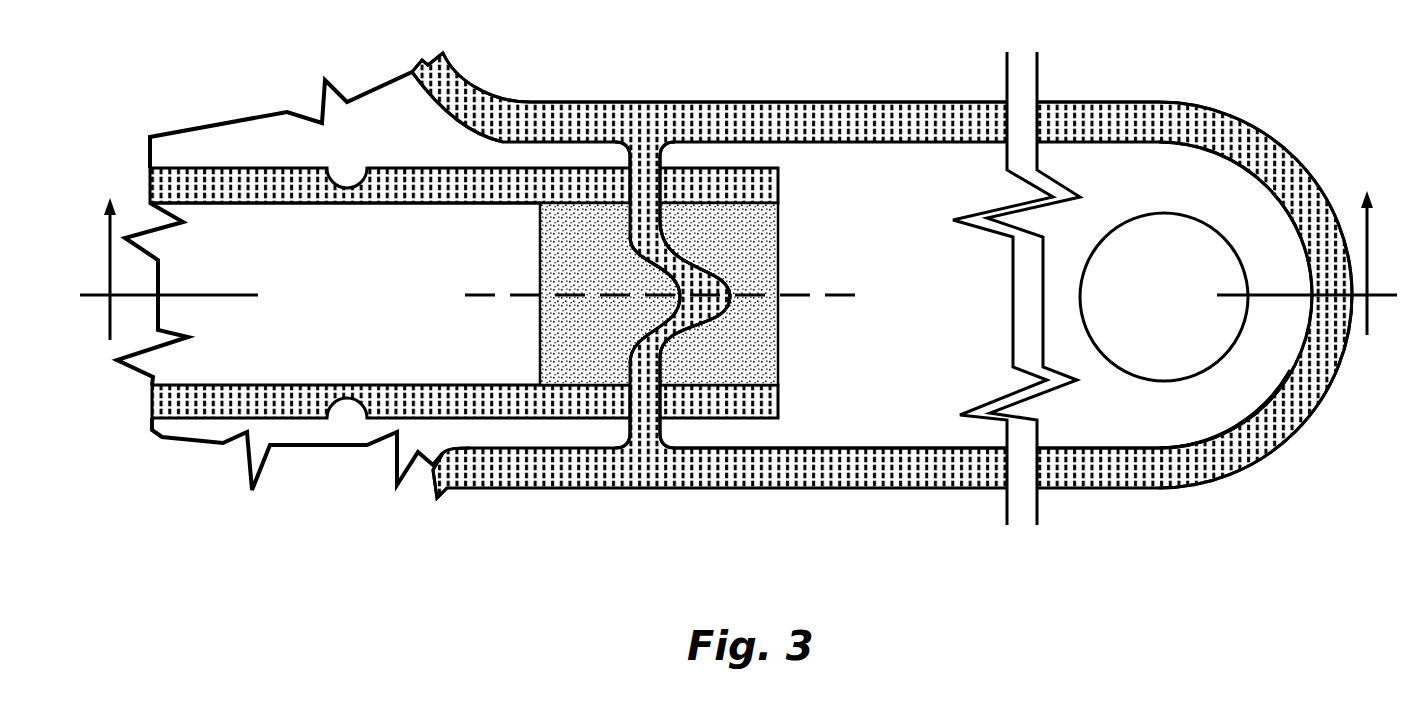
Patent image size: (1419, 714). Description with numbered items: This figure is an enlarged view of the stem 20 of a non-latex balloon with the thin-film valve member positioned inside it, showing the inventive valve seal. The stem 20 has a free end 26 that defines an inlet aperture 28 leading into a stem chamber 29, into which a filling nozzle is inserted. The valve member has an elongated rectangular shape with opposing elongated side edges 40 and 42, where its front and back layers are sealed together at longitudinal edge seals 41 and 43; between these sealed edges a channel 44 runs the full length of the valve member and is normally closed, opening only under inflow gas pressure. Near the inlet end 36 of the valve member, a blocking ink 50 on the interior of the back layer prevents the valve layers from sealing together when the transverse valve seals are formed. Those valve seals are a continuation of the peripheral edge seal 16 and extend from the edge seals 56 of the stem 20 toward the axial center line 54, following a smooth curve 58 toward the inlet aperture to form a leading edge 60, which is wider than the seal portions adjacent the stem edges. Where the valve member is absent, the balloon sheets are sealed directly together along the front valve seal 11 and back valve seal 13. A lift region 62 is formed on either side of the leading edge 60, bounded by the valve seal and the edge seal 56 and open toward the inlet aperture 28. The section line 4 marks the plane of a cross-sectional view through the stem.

The section line 4- 4 is at (738, 245).
The front valve seal 11 is at (622, 154).
The back valve seal 13 is at (693, 440).
The peripheral edge seal 16 is at (437, 90).
The stem 20 is at (949, 86).
The free end of the stem 26 is at (1278, 450).
The inlet aperture 28 is at (1167, 218).
The stem chamber 29 is at (1147, 412).
The inlet end of the valve member 36 is at (782, 237).
The first elongated side edge 40 is at (280, 178).
The first longitudinal edge seal 41 is at (438, 177).
The second elongated side edge 42 is at (197, 420).
The second longitudinal edge seal 43 is at (415, 387).
The channel 44 is at (325, 258).
The blocking ink 50 is at (765, 335).
The axial center line 54 is at (812, 295).
The edge seal of the stem 56 is at (820, 110).
The smooth curve 58 is at (690, 317).
The leading edge 60 is at (737, 297).
The lift region 62 is at (693, 233).